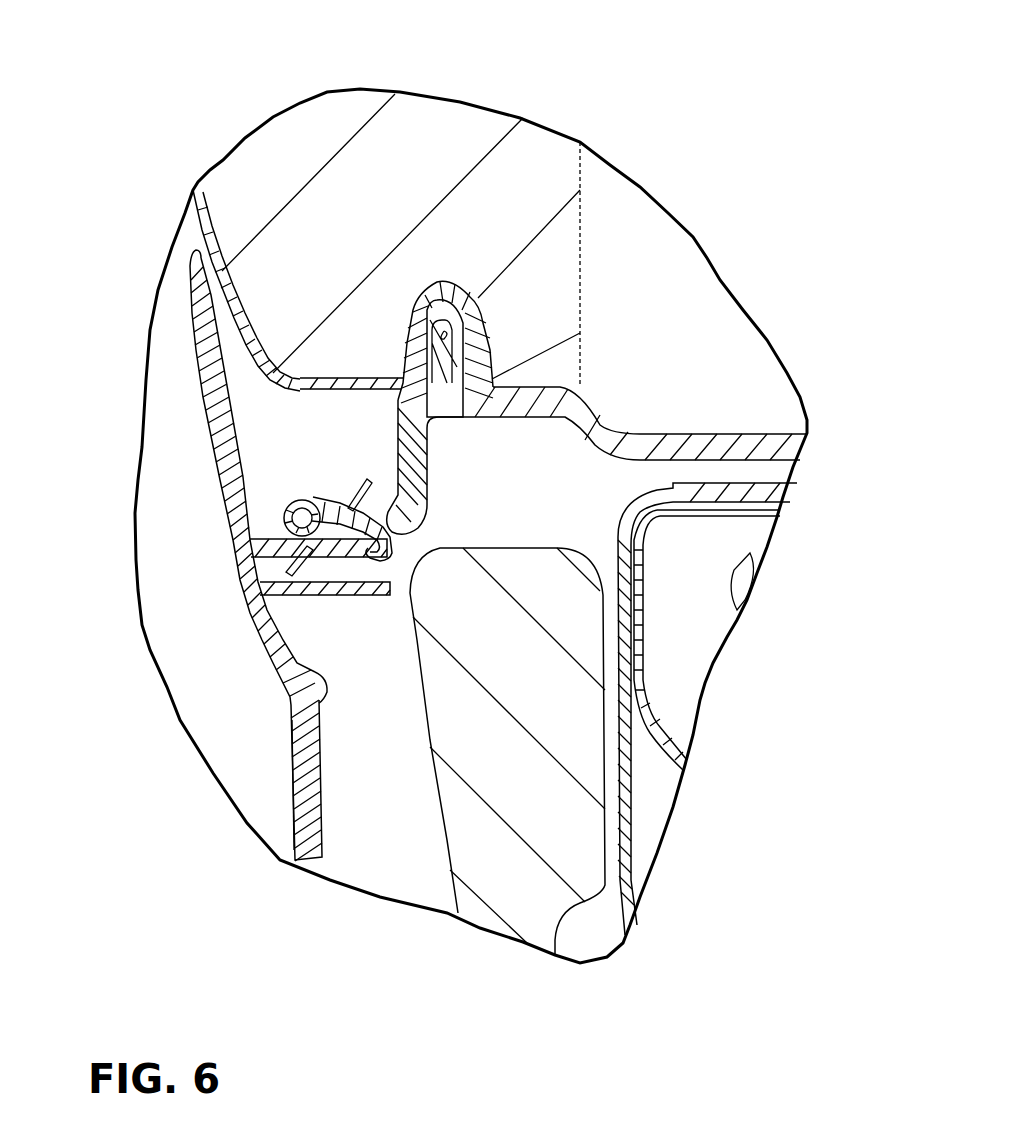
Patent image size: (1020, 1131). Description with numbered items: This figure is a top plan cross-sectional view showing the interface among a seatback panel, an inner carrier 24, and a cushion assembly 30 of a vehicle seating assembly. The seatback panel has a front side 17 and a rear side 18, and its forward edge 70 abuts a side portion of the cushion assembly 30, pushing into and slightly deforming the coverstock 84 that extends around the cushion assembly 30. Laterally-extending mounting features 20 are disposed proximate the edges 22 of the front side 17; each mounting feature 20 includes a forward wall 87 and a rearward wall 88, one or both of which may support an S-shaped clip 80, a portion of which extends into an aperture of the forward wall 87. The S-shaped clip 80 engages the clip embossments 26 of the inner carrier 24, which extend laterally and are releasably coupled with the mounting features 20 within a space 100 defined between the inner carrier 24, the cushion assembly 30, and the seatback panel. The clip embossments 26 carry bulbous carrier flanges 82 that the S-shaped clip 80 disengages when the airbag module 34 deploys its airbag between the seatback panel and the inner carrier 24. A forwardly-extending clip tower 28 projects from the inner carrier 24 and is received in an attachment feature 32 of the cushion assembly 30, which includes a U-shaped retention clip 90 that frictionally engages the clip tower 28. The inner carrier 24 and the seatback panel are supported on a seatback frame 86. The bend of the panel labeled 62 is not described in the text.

The front side 17 is at (217, 323).
The rear side 18 is at (290, 798).
The mounting features 20 is at (283, 478).
The edges 22 is at (222, 496).
The inner carrier 24 is at (588, 412).
The clip embossments 26 is at (287, 523).
The clip towers 28 is at (440, 343).
The cushion assembly 30 is at (363, 163).
The attachment features 32 is at (448, 282).
The airbag module 34 is at (485, 830).
The bend 62 is at (297, 703).
The forward edge 70 is at (195, 250).
The S-shaped clip 80 is at (290, 500).
The bulbous carrier flanges 82 is at (315, 525).
The coverstock 84 is at (250, 368).
The seatback frame 86 is at (643, 696).
The forward wall 87 is at (392, 545).
The rearward wall 88 is at (393, 590).
The retention clip 90 is at (483, 337).
The space 100 is at (317, 425).